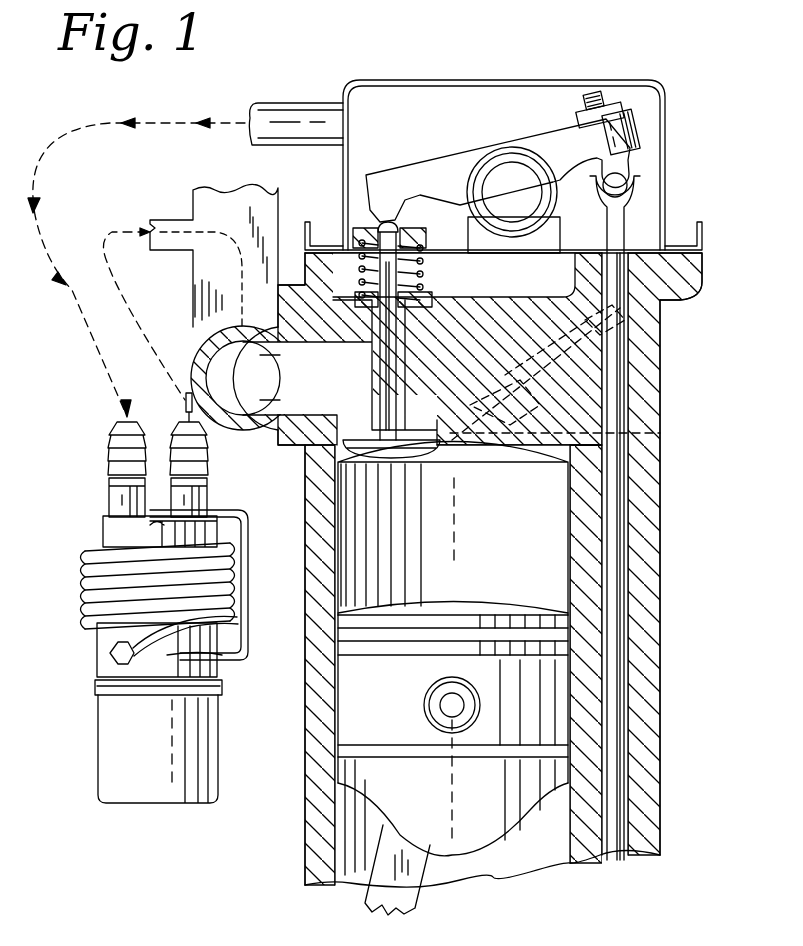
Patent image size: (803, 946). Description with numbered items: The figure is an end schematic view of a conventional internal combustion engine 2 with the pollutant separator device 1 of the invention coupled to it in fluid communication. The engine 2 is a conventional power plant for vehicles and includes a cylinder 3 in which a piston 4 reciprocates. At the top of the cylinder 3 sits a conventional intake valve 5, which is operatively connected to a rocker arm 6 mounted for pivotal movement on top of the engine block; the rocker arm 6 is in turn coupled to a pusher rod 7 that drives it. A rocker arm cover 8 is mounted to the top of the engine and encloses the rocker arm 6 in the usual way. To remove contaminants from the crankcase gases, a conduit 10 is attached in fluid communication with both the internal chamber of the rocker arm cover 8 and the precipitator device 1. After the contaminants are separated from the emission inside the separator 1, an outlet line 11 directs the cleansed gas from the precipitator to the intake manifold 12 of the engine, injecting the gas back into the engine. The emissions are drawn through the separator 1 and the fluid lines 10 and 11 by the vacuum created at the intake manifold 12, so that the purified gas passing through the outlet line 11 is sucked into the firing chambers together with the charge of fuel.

The pollutant separator device 1 is at (92, 658).
The internal combustion engine 2 is at (662, 463).
The cylinder 3 is at (548, 546).
The piston 4 is at (538, 802).
The intake valve 5 is at (405, 325).
The rocker arm 6 is at (446, 158).
The pusher rod 7 is at (625, 602).
The rocker arm cover 8 is at (667, 137).
The conduit 10 is at (273, 103).
The outlet line 11 is at (147, 297).
The intake manifold 12 is at (193, 212).